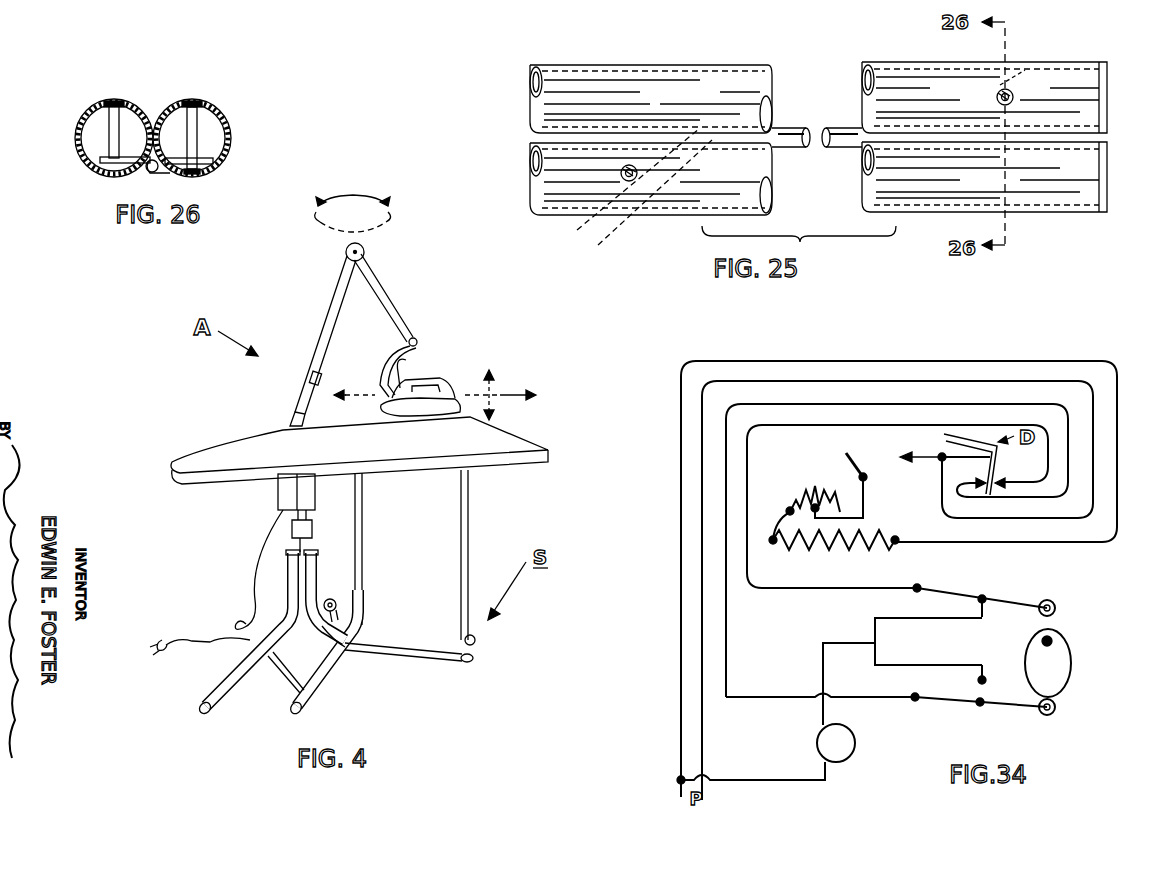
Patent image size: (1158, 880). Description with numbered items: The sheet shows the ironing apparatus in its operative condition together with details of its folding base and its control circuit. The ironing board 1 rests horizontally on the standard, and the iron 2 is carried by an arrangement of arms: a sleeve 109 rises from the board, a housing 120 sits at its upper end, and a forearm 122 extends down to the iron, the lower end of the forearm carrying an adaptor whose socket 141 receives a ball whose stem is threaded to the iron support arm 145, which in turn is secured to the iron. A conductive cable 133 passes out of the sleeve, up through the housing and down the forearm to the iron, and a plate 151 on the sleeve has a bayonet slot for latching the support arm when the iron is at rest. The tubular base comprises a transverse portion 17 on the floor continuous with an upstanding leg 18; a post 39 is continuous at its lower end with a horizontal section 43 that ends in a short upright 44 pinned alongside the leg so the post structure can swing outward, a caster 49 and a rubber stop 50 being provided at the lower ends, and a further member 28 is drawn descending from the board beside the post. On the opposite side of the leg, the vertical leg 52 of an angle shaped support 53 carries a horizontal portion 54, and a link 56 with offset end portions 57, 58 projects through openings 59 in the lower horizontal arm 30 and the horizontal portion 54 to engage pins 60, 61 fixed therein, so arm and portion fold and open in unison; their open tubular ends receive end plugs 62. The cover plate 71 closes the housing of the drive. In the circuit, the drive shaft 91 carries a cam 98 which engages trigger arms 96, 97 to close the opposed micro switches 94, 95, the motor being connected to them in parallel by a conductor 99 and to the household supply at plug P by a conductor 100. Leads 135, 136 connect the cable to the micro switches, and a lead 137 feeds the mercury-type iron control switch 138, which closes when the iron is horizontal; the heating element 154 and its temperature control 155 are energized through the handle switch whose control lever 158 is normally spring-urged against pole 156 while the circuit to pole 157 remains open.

In FIG. 4, the ironing board 1 is at (538, 440).
In FIG. 4, the iron 2 is at (436, 378).
In FIG. 4, the transverse portion 17 is at (322, 651).
In FIG. 4, the upstanding leg 18 is at (280, 547).
In FIG. 4, the leg 28 is at (363, 510).
In FIG. 26, the lower horizontal arm 30 is at (218, 118).
In FIG. 25, the lower horizontal arm 30 is at (530, 105).
In FIG. 4, the lower horizontal arm 30 is at (326, 693).
In FIG. 4, the post 39 is at (470, 513).
In FIG. 4, the horizontal section 43 is at (440, 660).
In FIG. 4, the short upright 44 is at (318, 566).
In FIG. 4, the roller or caster 49 is at (478, 634).
In FIG. 4, the stop 50 is at (476, 654).
In FIG. 4, the vertical leg 52 is at (287, 580).
In FIG. 4, the angle shaped support 53 is at (286, 622).
In FIG. 26, the horizontal portion 54 is at (92, 118).
In FIG. 25, the horizontal portion 54 is at (530, 198).
In FIG. 4, the horizontal portion 54 is at (243, 672).
In FIG. 26, the link 56 is at (150, 174).
In FIG. 25, the link 56 is at (848, 128).
In FIG. 4, the link 56 is at (290, 696).
In FIG. 26, the offset end portion 57 is at (222, 165).
In FIG. 25, the offset end portion 57 is at (1010, 90).
In FIG. 26, the offset end portion 58 is at (96, 160).
In FIG. 25, the offset end portion 58 is at (642, 198).
In FIG. 26, the opening 59 is at (163, 176).
In FIG. 26, the pin 60 is at (198, 104).
In FIG. 25, the pin 60 is at (1012, 92).
In FIG. 26, the pin 61 is at (110, 100).
In FIG. 25, the pin 61 is at (623, 184).
In FIG. 25, the end plug 62 is at (1107, 86).
In FIG. 4, the end plug 62 is at (309, 552).
In FIG. 4, the cover plate 71 is at (278, 492).
In FIG. 34, the drive shaft 91 is at (1052, 638).
In FIG. 34, the upper micro switch 94 is at (975, 604).
In FIG. 34, the lower micro switch 95 is at (975, 678).
In FIG. 34, the trigger arm 96 is at (1056, 602).
In FIG. 34, the trigger arm 97 is at (1056, 711).
In FIG. 34, the cam 98 is at (1072, 653).
In FIG. 34, the conductor 99 is at (822, 652).
In FIG. 34, the conductor 100 is at (755, 780).
In FIG. 4, the sleeve 109 is at (328, 306).
In FIG. 4, the housing 120 is at (364, 246).
In FIG. 4, the forearm 122 is at (392, 276).
In FIG. 4, the conductive cable 133 is at (404, 345).
In FIG. 34, the lead 135 is at (1022, 486).
In FIG. 34, the lead 136 is at (1005, 512).
In FIG. 34, the lead 137 is at (1000, 530).
In FIG. 34, the iron control switch 138 is at (858, 450).
In FIG. 4, the socket 141 is at (418, 341).
In FIG. 4, the iron support arm 145 is at (392, 365).
In FIG. 4, the plate 151 is at (322, 376).
In FIG. 34, the iron heating element 154 is at (812, 555).
In FIG. 34, the temperature control 155 is at (816, 482).
In FIG. 34, the pole 156 is at (980, 480).
In FIG. 34, the pole or contact 157 is at (995, 480).
In FIG. 34, the control lever 158 is at (958, 434).